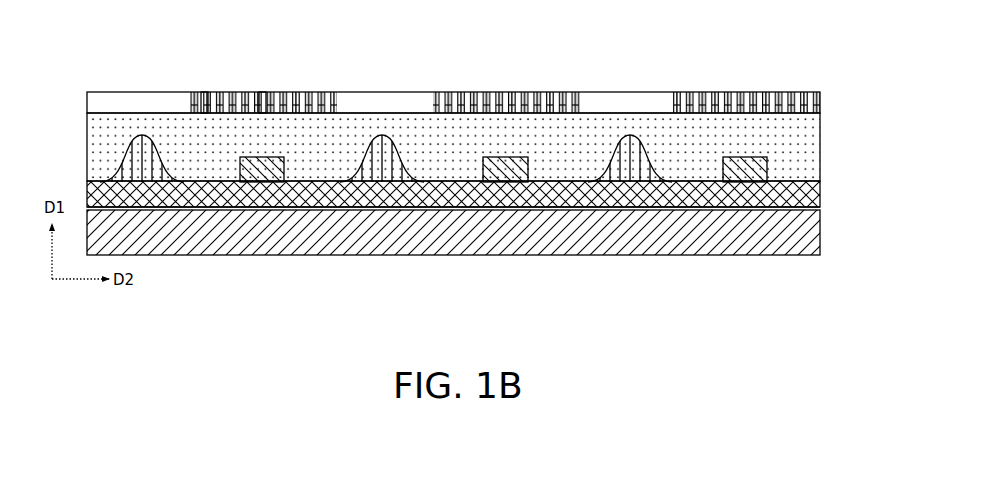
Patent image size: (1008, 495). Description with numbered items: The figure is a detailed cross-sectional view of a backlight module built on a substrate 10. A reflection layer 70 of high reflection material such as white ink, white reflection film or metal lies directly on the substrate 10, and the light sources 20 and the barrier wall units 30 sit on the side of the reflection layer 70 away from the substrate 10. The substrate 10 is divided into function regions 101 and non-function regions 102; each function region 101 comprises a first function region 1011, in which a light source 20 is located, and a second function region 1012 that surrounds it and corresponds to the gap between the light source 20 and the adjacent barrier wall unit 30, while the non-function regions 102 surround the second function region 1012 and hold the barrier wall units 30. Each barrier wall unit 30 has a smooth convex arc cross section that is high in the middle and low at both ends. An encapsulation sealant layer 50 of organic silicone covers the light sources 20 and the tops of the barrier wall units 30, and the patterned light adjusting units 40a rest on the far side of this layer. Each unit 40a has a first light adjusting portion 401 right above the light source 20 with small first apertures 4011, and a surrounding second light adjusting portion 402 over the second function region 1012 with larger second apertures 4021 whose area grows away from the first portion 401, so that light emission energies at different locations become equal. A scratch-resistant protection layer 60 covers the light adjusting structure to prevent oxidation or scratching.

The substrate 10 is at (798, 237).
The light sources 20 is at (745, 170).
The barrier wall units 30 is at (140, 167).
The encapsulation sealant layer 50 is at (800, 143).
The protection layer 60 is at (108, 100).
The reflection layer 70 is at (806, 198).
The patterned light adjusting units 40a is at (579, 92).
The first light adjusting portion 401 is at (528, 14).
The second light adjusting portion 402 is at (486, 14).
The first apertures 4011 is at (263, 91).
The second apertures 4021 is at (203, 91).
The function regions 101 is at (585, 327).
The non-function regions 102 is at (677, 255).
The first function region 1011 is at (528, 255).
The second function region 1012 is at (585, 332).